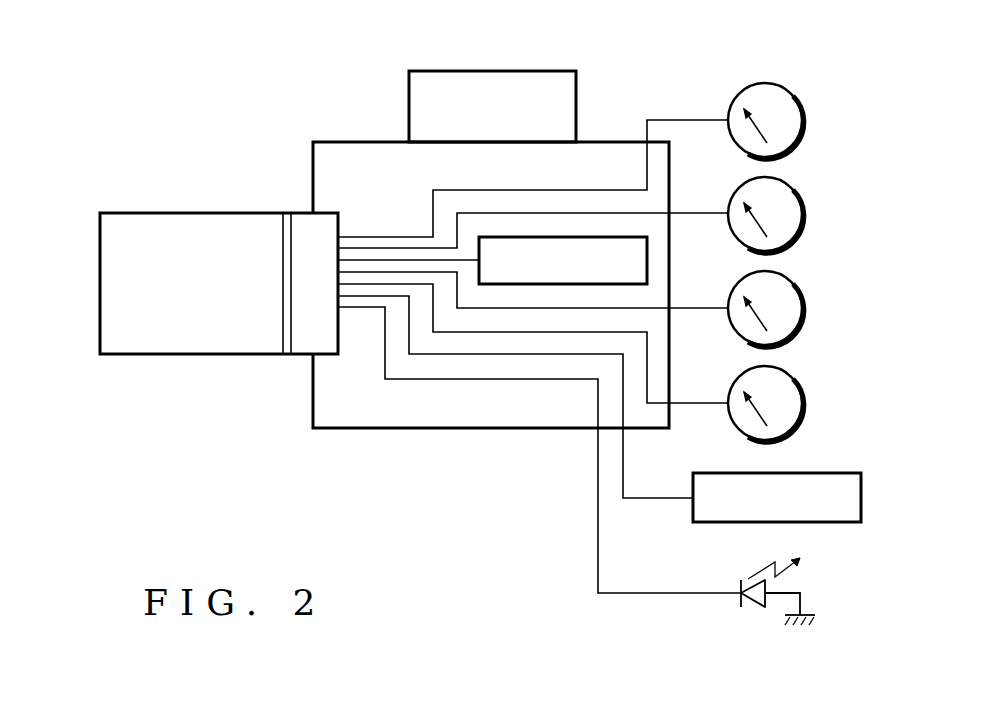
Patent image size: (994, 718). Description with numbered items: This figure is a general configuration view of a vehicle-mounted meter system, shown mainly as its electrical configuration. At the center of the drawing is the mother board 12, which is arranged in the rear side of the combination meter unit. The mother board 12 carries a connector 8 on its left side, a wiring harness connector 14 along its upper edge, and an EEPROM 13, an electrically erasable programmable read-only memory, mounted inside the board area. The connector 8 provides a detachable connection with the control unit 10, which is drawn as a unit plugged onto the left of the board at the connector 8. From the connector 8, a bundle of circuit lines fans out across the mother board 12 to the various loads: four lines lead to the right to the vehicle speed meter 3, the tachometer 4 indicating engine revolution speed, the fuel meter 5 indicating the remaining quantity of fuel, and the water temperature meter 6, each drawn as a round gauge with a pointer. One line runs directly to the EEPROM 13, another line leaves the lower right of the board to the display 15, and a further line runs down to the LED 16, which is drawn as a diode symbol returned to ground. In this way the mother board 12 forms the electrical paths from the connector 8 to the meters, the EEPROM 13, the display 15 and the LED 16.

The vehicle speed meter 3 is at (787, 86).
The tachometer 4 is at (787, 180).
The fuel meter 5 is at (787, 275).
The water temperature meter 6 is at (787, 368).
The connector 8 is at (314, 232).
The control unit 10 is at (172, 225).
The mother board 12 is at (387, 140).
The EEPROM 13 is at (647, 262).
The wiring harness connector 14 is at (515, 70).
The display 15 is at (800, 473).
The LED 16 is at (802, 582).